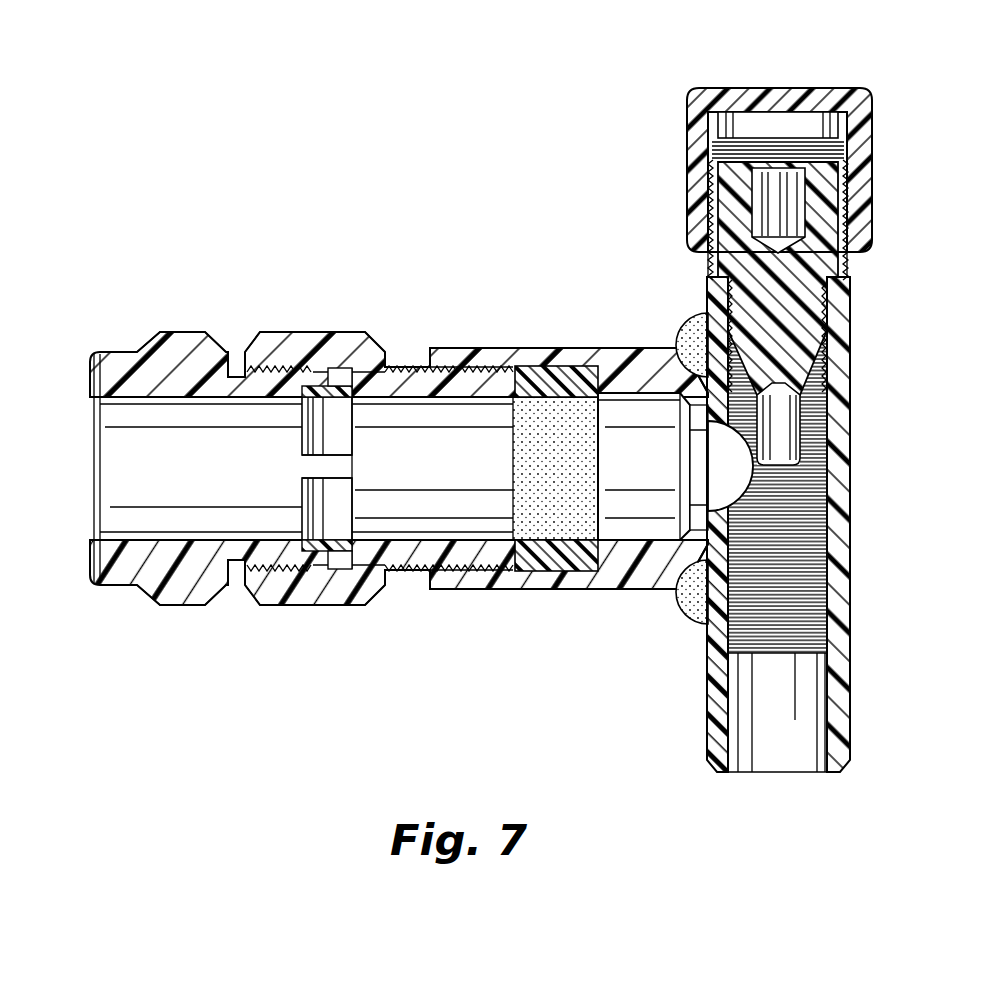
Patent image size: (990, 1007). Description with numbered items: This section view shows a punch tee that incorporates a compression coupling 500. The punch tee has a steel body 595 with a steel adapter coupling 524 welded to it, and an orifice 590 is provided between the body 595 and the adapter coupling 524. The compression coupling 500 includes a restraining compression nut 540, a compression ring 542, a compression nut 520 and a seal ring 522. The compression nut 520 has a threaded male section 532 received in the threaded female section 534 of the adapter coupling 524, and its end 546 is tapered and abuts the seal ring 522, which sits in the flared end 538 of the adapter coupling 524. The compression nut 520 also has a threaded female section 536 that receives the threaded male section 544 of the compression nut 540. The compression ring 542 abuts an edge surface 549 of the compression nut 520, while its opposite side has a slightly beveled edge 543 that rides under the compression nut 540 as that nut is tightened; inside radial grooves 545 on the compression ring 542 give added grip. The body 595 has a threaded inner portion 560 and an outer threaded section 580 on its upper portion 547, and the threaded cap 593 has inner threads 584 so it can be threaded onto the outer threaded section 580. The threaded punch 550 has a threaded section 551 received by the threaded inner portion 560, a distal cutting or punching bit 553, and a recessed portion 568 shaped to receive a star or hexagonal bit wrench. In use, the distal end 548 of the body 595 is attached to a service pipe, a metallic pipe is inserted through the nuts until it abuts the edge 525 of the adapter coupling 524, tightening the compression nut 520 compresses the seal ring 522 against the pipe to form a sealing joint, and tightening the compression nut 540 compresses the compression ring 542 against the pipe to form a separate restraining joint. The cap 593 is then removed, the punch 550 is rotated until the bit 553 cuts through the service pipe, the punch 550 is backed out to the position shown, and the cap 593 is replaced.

The compression coupling 500 is at (335, 117).
The compression nut 520 is at (309, 346).
The seal ring 522 is at (545, 586).
The adapter coupling 524 is at (612, 590).
The edge 525 is at (650, 590).
The threaded male section 532 is at (405, 366).
The threaded female section 534 is at (460, 346).
The threaded female section 536 is at (278, 348).
The flared end 538 is at (603, 348).
The restraining compression nut 540 is at (106, 352).
The compression ring 542 is at (340, 603).
The beveled edge 543 is at (316, 603).
The threaded male section 544 is at (236, 352).
The inside radial grooves 545 is at (272, 603).
The end 546 is at (544, 348).
The upper portion 547 is at (760, 130).
The distal end 548 is at (838, 760).
The edge surface 549 is at (374, 603).
The threaded punch 550 is at (807, 302).
The threaded section 551 is at (704, 272).
The cutting or punching bit 553 is at (803, 400).
The threaded inner portion 560 is at (803, 517).
The recessed portion 568 is at (787, 165).
The outer threaded section 580 is at (843, 262).
The inner threads 584 is at (848, 202).
The orifice 590 is at (738, 465).
The threaded cap 593 is at (873, 127).
The steel body 595 is at (852, 634).